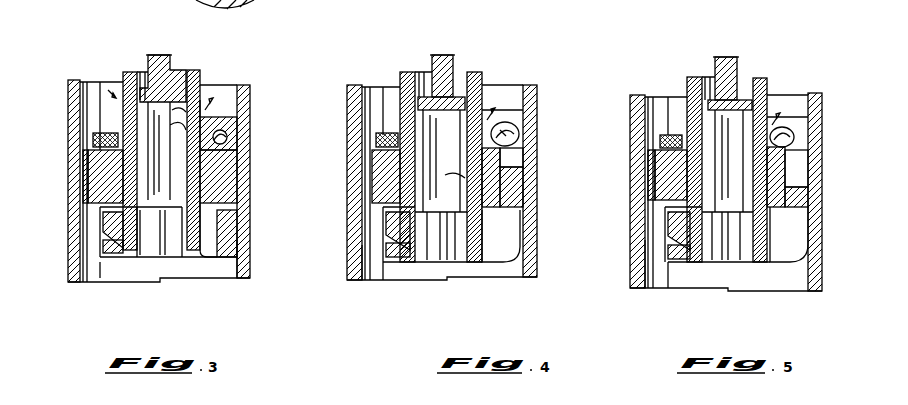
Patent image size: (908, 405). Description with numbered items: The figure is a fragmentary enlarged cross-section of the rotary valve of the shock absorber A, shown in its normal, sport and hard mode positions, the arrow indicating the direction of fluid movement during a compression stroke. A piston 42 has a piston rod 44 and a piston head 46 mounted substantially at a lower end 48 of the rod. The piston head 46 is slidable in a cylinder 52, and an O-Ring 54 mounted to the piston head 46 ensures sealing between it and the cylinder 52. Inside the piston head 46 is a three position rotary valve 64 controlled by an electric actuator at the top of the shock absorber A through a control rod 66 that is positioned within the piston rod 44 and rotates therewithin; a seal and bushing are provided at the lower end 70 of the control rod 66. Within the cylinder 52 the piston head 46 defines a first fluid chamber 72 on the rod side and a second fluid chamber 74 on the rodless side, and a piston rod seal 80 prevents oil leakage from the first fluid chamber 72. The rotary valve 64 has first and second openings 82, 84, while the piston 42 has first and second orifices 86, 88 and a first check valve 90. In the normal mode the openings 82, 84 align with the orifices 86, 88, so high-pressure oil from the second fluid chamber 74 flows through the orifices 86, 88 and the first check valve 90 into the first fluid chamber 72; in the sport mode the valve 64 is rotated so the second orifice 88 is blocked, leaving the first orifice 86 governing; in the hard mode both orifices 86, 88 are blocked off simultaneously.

In FIG. 3, the piston 42 is at (112, 95).
In FIG. 4, the piston 42 is at (385, 105).
In FIG. 5, the piston 42 is at (672, 110).
In FIG. 3, the piston rod 44 is at (130, 82).
In FIG. 4, the piston rod 44 is at (482, 78).
In FIG. 5, the piston rod 44 is at (770, 90).
In FIG. 3, the piston head 46 is at (92, 190).
In FIG. 4, the piston head 46 is at (497, 190).
In FIG. 5, the piston head 46 is at (650, 192).
In FIG. 3, the lower end 48 is at (110, 222).
In FIG. 4, the lower end 48 is at (400, 213).
In FIG. 5, the lower end 48 is at (680, 215).
In FIG. 3, the cylinder 52 is at (252, 250).
In FIG. 4, the cylinder 52 is at (348, 250).
In FIG. 5, the cylinder 52 is at (633, 238).
In FIG. 3, the O-Ring 54 is at (88, 168).
In FIG. 4, the O-Ring 54 is at (520, 175).
In FIG. 5, the O-Ring 54 is at (655, 175).
In FIG. 3, the three position rotary valve 64 is at (135, 70).
In FIG. 4, the three position rotary valve 64 is at (412, 70).
In FIG. 5, the three position rotary valve 64 is at (695, 78).
In FIG. 3, the control rod 66 is at (155, 55).
In FIG. 4, the control rod 66 is at (440, 55).
In FIG. 5, the control rod 66 is at (735, 62).
In FIG. 3, the lower end 70 is at (150, 90).
In FIG. 4, the lower end 70 is at (450, 90).
In FIG. 5, the lower end 70 is at (762, 90).
In FIG. 3, the first fluid chamber 72 is at (98, 110).
In FIG. 4, the first fluid chamber 72 is at (390, 112).
In FIG. 5, the first fluid chamber 72 is at (670, 118).
In FIG. 3, the second fluid chamber 74 is at (117, 272).
In FIG. 4, the second fluid chamber 74 is at (378, 272).
In FIG. 5, the second fluid chamber 74 is at (670, 278).
In FIG. 3, the piston rod seal 80 is at (222, 129).
In FIG. 3, the first opening 82 is at (165, 215).
In FIG. 4, the first opening 82 is at (450, 232).
In FIG. 5, the first opening 82 is at (727, 236).
In FIG. 3, the second opening 84 is at (197, 72).
In FIG. 4, the second opening 84 is at (474, 167).
In FIG. 5, the second opening 84 is at (760, 170).
In FIG. 3, the first orifice 86 is at (238, 205).
In FIG. 4, the first orifice 86 is at (520, 150).
In FIG. 5, the first orifice 86 is at (784, 161).
In FIG. 3, the second orifice 88 is at (215, 100).
In FIG. 4, the second orifice 88 is at (484, 122).
In FIG. 5, the second orifice 88 is at (792, 128).
In FIG. 4, the first check valve 90 is at (505, 123).
In FIG. 5, the first check valve 90 is at (785, 145).
In FIG. 3, the shock absorber A is at (260, 272).
In FIG. 4, the shock absorber A is at (548, 272).
In FIG. 5, the shock absorber A is at (623, 262).